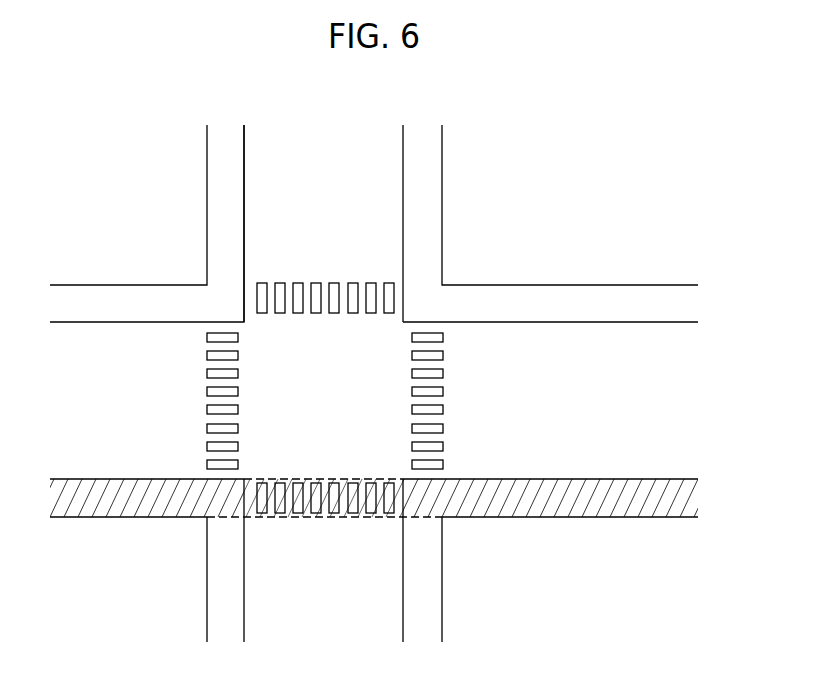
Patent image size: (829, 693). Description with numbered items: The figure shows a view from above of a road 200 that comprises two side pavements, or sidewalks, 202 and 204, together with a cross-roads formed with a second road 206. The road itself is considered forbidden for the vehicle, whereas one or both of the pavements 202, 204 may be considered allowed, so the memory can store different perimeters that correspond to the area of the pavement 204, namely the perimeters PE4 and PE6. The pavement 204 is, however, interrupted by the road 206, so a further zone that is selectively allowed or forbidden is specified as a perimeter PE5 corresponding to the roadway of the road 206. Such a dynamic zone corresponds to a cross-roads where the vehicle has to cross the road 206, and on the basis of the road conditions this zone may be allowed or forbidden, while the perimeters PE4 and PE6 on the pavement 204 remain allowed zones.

The road 200 is at (634, 409).
The side pavement 202 is at (677, 303).
The side pavement 204 is at (673, 492).
The second road 206 is at (295, 173).
The perimeter PE4 is at (118, 493).
The perimeter PE5 is at (320, 518).
The perimeter PE6 is at (543, 493).